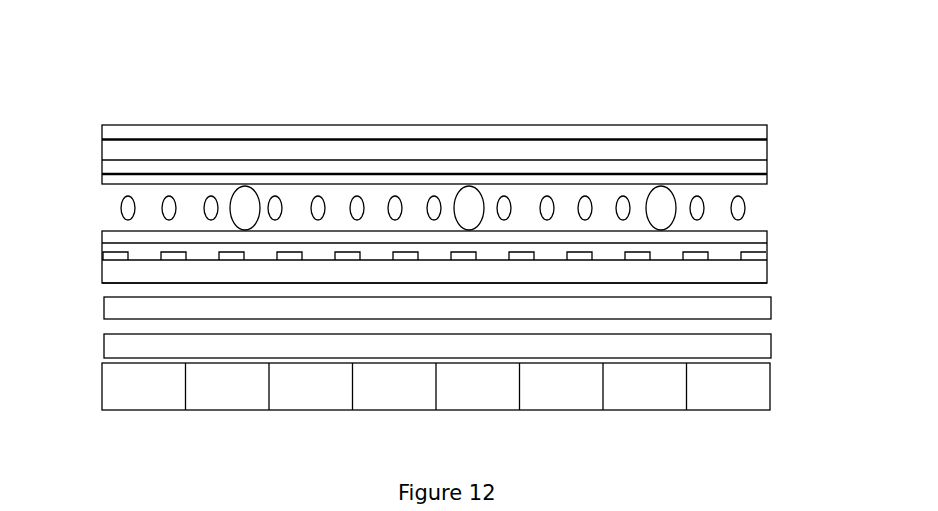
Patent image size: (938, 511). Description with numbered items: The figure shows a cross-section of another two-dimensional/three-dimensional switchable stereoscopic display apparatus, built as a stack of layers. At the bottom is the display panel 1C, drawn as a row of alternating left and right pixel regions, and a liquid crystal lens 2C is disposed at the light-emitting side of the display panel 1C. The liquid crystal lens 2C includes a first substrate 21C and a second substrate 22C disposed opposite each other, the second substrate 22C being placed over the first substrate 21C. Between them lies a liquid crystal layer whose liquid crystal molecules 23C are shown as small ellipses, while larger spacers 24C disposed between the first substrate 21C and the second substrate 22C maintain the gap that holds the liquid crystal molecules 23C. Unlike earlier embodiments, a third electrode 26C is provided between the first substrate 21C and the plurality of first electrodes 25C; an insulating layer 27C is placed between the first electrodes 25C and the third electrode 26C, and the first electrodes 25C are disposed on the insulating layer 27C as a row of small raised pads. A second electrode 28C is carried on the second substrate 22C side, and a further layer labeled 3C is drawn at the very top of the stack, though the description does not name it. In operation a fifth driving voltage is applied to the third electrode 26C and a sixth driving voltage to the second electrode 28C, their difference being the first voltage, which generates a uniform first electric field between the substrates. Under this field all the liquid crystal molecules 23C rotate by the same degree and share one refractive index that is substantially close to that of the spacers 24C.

The display panel 1C is at (758, 390).
The first substrate 21C is at (771, 343).
The third electrode 26C is at (771, 300).
The liquid crystal lens 2C is at (774, 222).
The insulating layer 27C is at (110, 273).
The first electrodes 25C is at (107, 253).
The liquid crystal molecules 23C is at (120, 207).
The spacers 24C is at (250, 199).
The second electrode 28C is at (112, 172).
The second substrate 22C is at (109, 153).
The upper polarizing plate 3C is at (756, 134).